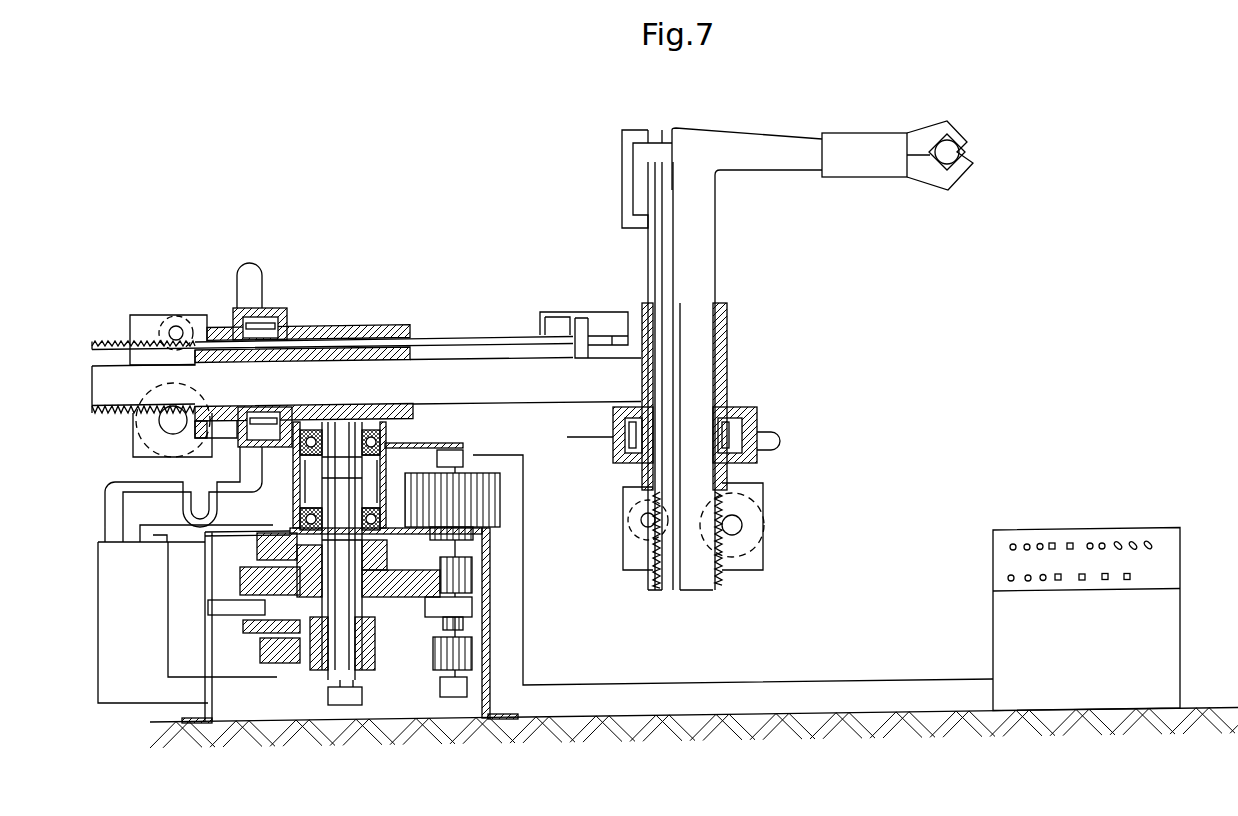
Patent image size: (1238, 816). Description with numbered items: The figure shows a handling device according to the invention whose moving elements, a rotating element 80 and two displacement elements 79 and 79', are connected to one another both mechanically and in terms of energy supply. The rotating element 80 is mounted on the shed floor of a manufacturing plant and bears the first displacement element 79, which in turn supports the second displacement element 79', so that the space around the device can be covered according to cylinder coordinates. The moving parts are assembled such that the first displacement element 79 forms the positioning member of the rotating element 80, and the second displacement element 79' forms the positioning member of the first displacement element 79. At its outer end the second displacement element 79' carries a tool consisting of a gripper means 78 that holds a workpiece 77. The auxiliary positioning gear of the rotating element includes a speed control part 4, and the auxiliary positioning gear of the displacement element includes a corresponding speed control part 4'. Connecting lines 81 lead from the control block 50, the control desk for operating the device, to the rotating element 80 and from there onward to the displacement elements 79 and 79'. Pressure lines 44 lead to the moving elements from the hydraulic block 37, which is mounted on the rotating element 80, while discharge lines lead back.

The speed control part 4 is at (357, 570).
The speed control part 4' is at (576, 325).
The hydraulic block 37 is at (132, 688).
The pressure lines 44 is at (253, 263).
The control block 50 is at (1165, 645).
The workpiece 77 is at (955, 155).
The gripper means 78 is at (927, 132).
The displacement element 79 is at (366, 386).
The displacement element 79' is at (722, 359).
The rotating element 80 is at (490, 643).
The connecting lines 81 is at (523, 590).